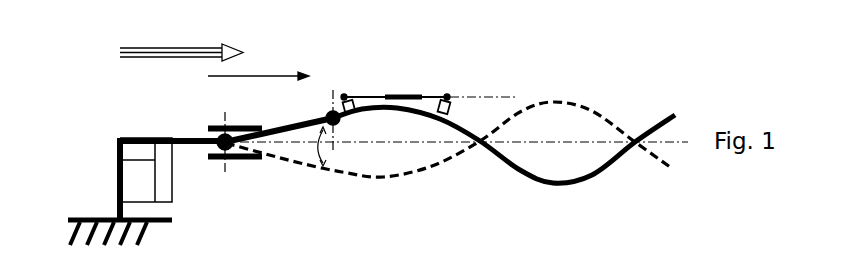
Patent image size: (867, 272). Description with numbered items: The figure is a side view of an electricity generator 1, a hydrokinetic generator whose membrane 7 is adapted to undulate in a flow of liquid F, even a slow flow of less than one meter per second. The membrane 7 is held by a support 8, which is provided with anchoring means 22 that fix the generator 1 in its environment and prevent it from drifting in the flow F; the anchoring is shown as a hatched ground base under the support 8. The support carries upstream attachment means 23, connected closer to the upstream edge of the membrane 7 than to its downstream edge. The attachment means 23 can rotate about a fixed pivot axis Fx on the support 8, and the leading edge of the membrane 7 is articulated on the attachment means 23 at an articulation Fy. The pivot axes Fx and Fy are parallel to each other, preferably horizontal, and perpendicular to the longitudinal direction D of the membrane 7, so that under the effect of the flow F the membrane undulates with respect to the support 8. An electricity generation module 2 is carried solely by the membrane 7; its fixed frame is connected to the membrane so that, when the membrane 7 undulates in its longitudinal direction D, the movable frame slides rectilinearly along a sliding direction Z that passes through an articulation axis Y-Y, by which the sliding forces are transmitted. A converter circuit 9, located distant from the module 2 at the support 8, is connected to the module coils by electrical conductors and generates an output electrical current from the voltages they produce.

The electricity generator 1 is at (130, 96).
The electricity generation module 2 is at (397, 95).
The membrane 7 is at (666, 116).
The support 8 is at (138, 138).
The converter circuit 9 is at (132, 156).
The anchoring means 22 is at (171, 222).
The upstream attachment means 23 is at (298, 123).
The flow of liquid F is at (152, 48).
The longitudinal direction D is at (268, 75).
The fixed pivot axis Fx is at (206, 136).
The articulation Fy is at (333, 111).
The articulation axis Y-Y is at (446, 95).
The rectilinear sliding direction Z is at (515, 96).